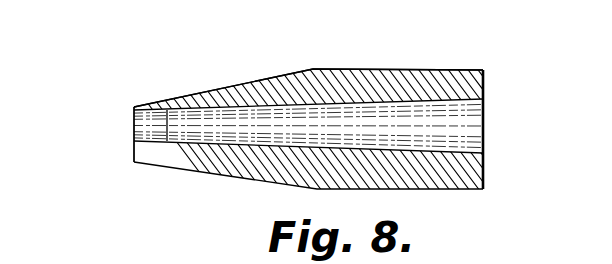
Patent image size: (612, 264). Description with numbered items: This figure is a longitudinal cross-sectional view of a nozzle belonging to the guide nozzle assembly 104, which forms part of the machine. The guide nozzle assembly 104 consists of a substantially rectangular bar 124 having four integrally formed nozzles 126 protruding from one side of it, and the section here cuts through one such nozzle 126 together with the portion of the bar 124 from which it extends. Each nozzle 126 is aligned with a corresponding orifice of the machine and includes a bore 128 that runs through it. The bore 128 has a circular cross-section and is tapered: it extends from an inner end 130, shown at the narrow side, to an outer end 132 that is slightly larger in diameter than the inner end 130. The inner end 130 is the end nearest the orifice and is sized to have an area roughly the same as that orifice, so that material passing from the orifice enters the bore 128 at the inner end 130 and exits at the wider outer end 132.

The guide nozzle assembly 104 is at (238, 186).
The substantially rectangular bar 124 is at (407, 70).
The nozzle 126 is at (246, 80).
The bore 128 is at (454, 102).
The inner end 130 is at (134, 137).
The outer end 132 is at (448, 148).